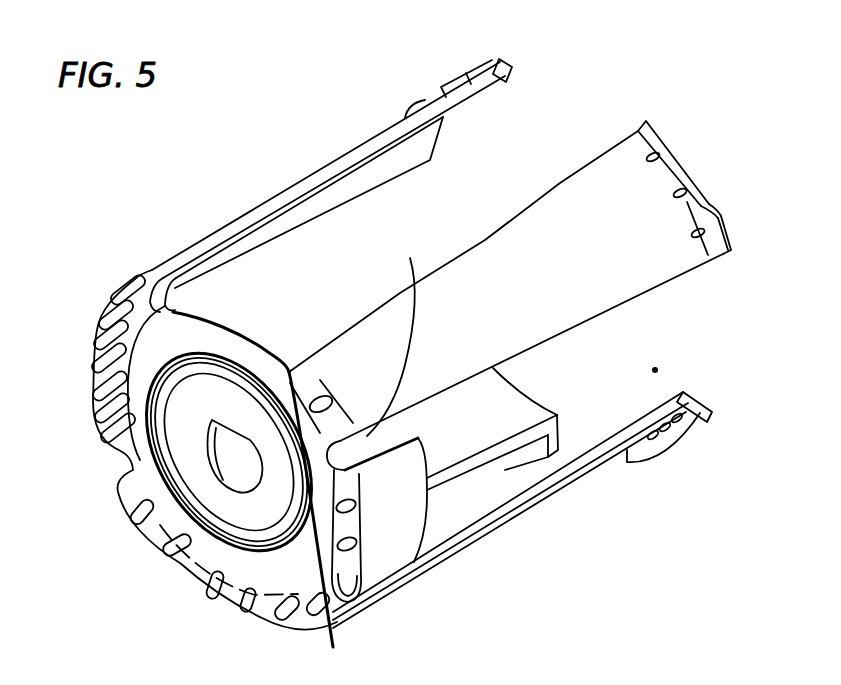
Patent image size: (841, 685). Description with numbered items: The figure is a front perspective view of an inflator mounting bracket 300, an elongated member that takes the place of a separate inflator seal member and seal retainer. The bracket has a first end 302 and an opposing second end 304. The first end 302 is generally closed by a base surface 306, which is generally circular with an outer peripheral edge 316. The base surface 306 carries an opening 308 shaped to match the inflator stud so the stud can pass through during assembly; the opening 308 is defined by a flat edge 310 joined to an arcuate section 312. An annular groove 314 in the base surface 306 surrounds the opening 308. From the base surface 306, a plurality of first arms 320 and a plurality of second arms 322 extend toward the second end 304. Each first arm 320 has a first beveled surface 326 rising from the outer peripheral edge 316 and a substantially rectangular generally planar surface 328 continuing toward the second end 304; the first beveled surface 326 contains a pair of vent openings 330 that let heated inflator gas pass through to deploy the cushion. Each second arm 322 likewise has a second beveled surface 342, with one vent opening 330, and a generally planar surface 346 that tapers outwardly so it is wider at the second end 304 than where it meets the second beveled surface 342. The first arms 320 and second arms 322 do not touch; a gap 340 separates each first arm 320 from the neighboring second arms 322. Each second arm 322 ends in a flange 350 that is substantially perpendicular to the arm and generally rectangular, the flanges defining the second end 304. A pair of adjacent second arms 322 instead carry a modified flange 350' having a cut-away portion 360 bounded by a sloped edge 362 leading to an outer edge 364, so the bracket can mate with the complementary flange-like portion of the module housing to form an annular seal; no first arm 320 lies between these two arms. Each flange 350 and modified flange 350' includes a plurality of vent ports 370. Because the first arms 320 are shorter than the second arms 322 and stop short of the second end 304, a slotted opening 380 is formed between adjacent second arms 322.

The inflator mounting bracket 300 is at (168, 224).
The first end 302 is at (97, 379).
The second end 304 is at (673, 148).
The base surface 306 is at (267, 575).
The opening 308 is at (238, 462).
The flat edge 310 is at (237, 428).
The arcuate section 312 is at (333, 646).
The annular groove 314 is at (150, 455).
The outer peripheral edge 316 is at (270, 350).
The first arms 320 is at (362, 508).
The second arms 322 is at (283, 188).
The first beveled surface 326 is at (362, 525).
The generally planar surface 328 is at (410, 492).
The vent opening 330 is at (430, 595).
The gap 340 is at (354, 336).
The second beveled surface 342 is at (313, 378).
The generally planar surface 346 is at (648, 273).
The flange 350 is at (535, 510).
The modified flange 350' is at (758, 204).
The cut-away portion 360 is at (452, 75).
The sloped edge 362 is at (720, 212).
The outer edge 364 is at (657, 130).
The vent ports 370 is at (700, 407).
The slotted opening 380 is at (655, 370).